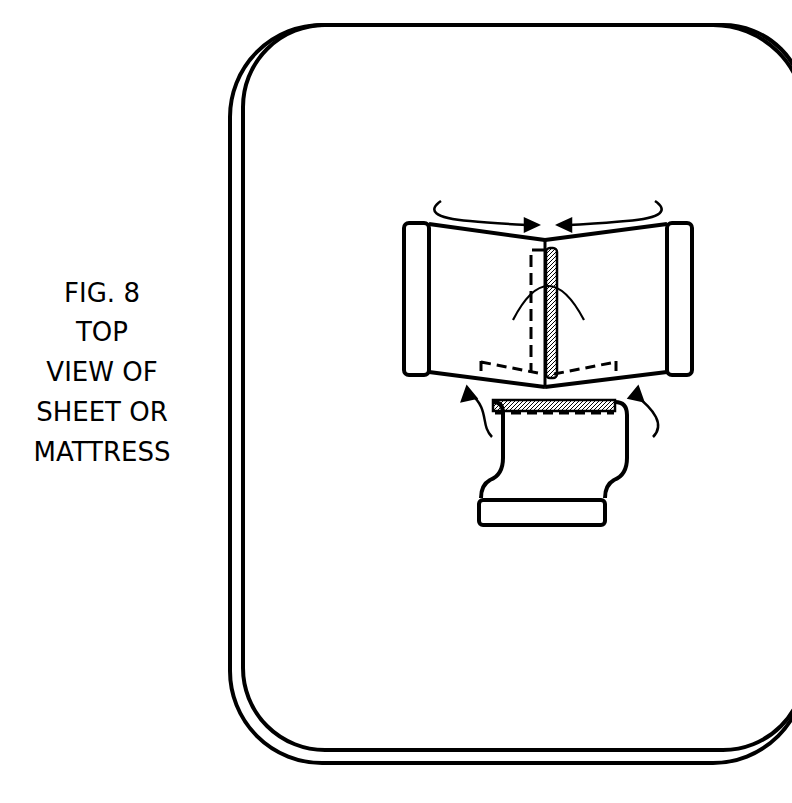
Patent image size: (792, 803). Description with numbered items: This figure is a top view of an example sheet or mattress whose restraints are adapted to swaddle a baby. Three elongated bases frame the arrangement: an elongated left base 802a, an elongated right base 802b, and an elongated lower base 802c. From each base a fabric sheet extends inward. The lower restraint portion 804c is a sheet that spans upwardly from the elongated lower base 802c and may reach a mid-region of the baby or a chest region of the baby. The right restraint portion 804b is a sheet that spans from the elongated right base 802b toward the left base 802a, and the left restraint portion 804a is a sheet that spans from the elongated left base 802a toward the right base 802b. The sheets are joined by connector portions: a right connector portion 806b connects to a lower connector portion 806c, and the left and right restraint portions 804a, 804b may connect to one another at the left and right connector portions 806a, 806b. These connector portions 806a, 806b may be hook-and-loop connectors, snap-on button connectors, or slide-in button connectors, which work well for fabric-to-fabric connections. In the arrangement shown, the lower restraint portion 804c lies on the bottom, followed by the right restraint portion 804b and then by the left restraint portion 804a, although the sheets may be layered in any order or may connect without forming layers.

The elongated left base 802a is at (413, 361).
The elongated right base 802b is at (682, 362).
The elongated lower base 802c is at (557, 518).
The left restraint portion 804a is at (505, 284).
The right restraint portion 804b is at (632, 284).
The lower restraint portion 804c is at (567, 486).
The left connector portion 806a is at (518, 372).
The right connector portion 806b is at (581, 372).
The lower connector portion 806c is at (537, 413).